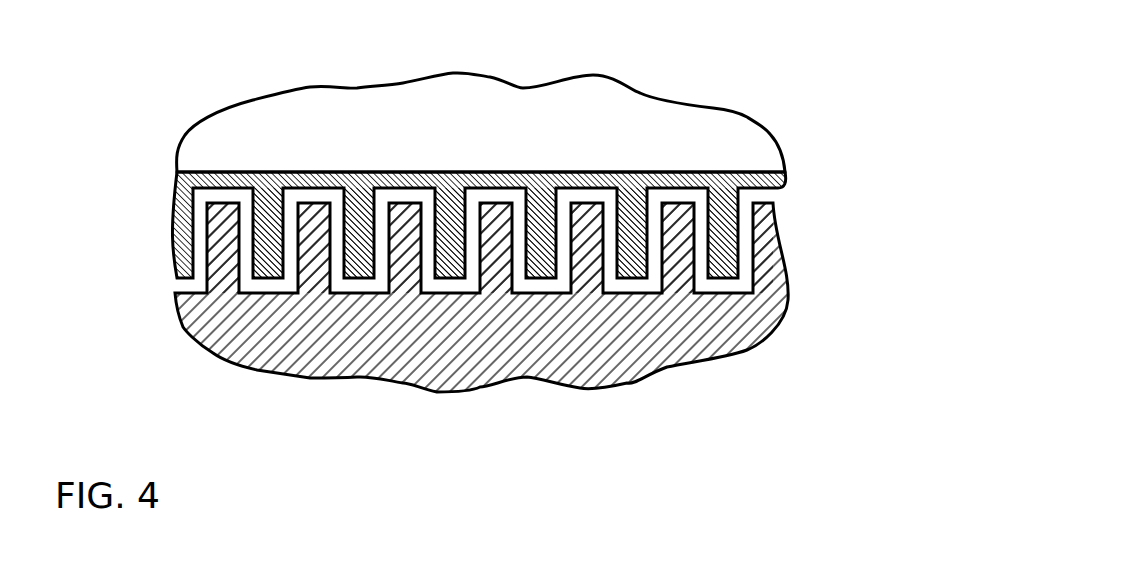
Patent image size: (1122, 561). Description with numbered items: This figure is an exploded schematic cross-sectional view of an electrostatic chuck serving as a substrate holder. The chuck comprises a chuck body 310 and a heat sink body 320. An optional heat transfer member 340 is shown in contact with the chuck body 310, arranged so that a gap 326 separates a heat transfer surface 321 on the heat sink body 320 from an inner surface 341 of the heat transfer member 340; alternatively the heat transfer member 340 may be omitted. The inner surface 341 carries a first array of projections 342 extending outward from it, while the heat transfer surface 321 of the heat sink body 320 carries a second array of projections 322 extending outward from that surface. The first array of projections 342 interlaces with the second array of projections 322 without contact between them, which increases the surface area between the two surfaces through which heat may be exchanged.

The chuck body 310 is at (705, 137).
The heat sink body 320 is at (747, 349).
The heat transfer surface 321 is at (745, 286).
The second array of projections 322 is at (587, 268).
The gap 326 is at (790, 197).
The heat transfer member 340 is at (786, 183).
The inner surface 341 is at (200, 198).
The first array of projections 342 is at (540, 233).